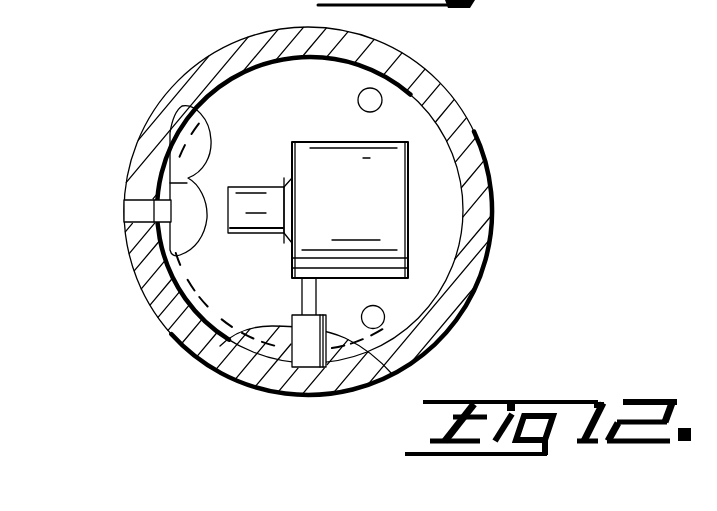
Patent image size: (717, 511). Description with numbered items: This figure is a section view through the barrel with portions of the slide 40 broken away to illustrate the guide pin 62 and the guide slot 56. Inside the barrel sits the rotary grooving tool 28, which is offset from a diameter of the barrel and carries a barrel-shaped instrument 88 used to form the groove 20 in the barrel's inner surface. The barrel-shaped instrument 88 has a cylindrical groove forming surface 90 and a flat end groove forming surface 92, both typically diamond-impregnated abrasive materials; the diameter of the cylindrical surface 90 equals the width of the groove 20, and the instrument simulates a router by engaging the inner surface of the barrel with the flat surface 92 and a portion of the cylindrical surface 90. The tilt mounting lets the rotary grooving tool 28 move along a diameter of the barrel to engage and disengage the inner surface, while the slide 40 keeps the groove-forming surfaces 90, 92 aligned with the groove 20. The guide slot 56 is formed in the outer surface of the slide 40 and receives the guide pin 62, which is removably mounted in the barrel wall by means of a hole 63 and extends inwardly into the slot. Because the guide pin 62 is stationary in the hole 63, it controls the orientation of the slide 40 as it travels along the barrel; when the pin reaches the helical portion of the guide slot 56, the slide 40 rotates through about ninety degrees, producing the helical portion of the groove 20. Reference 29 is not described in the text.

The groove 20 is at (207, 355).
The rotary grooving tool 28 is at (385, 153).
The direction arrow 29 is at (252, 80).
The slide 40 is at (448, 140).
The guide slot 56 is at (184, 106).
The guide pin 62 is at (193, 167).
The hole 63 is at (125, 200).
The barrel-shaped instrument 88 is at (395, 373).
The cylindrical groove forming surface 90 is at (352, 380).
The flat end groove forming surface 92 is at (265, 388).